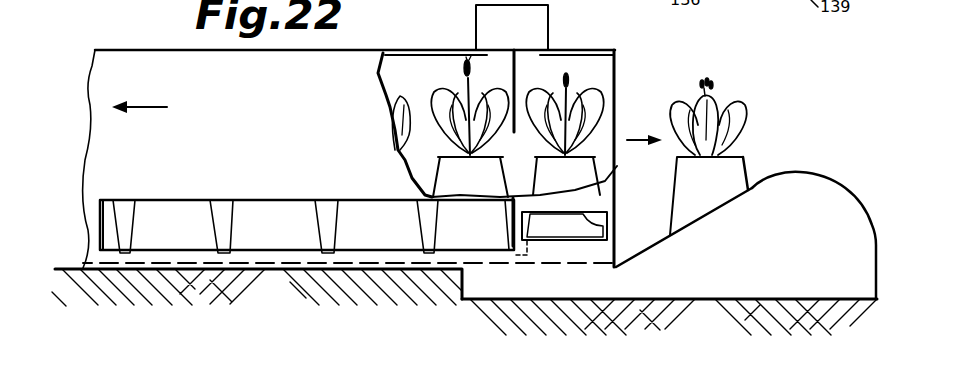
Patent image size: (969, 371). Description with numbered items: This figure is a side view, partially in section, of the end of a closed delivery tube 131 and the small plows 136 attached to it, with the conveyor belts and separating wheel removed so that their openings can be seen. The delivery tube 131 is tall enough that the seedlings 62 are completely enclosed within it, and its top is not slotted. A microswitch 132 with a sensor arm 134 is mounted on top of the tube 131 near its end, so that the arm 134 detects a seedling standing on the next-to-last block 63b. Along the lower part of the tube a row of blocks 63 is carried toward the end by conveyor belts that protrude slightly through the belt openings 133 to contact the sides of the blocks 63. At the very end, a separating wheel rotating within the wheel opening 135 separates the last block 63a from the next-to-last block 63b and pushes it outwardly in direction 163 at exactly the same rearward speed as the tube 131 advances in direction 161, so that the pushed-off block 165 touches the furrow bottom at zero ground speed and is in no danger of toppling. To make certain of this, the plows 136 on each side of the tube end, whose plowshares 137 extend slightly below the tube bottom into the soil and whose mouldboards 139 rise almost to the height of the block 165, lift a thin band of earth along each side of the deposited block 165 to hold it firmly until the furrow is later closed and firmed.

The closed delivery tube 131 is at (86, 85).
The forward direction of delivery tube 161 is at (164, 107).
The microswitch 132 is at (549, 21).
The sensor arm 134 is at (516, 67).
The seedling 62 is at (593, 98).
The outward push direction 163 is at (627, 140).
The belt opening 133 is at (223, 201).
The block 63 is at (284, 234).
The next-to-last block 63b is at (485, 234).
The last block 63a is at (570, 234).
The wheel opening 135 is at (603, 224).
The deposited block 165 is at (742, 158).
The mouldboard 139 is at (824, 179).
The plowshare 137 is at (457, 290).
The plow 136 is at (626, 287).